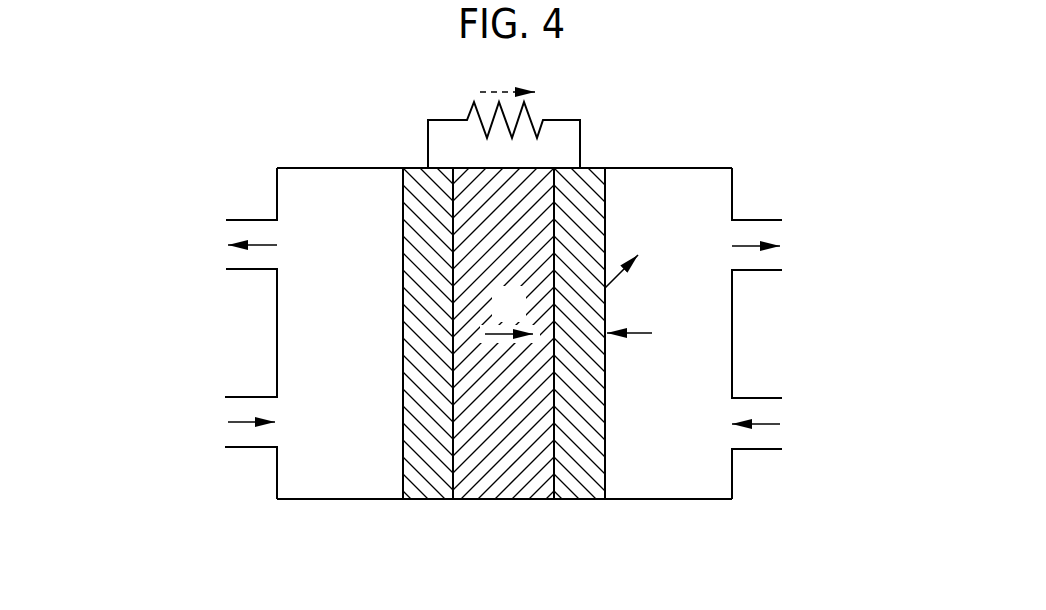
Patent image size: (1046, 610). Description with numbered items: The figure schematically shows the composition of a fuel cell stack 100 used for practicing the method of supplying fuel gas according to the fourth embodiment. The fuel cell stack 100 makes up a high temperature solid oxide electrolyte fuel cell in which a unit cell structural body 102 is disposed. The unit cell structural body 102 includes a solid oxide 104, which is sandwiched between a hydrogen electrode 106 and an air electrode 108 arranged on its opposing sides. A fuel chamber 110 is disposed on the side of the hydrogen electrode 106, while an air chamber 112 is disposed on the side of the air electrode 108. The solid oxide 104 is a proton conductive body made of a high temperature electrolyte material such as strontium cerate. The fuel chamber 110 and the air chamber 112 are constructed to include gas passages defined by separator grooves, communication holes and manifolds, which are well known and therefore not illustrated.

The fuel cell stack 100 is at (687, 125).
The unit cell structural body 102 is at (534, 375).
The solid oxide 104 is at (487, 500).
The hydrogen electrode 106 is at (428, 500).
The air electrode 108 is at (568, 500).
The fuel chamber 110 is at (283, 338).
The air chamber 112 is at (793, 348).